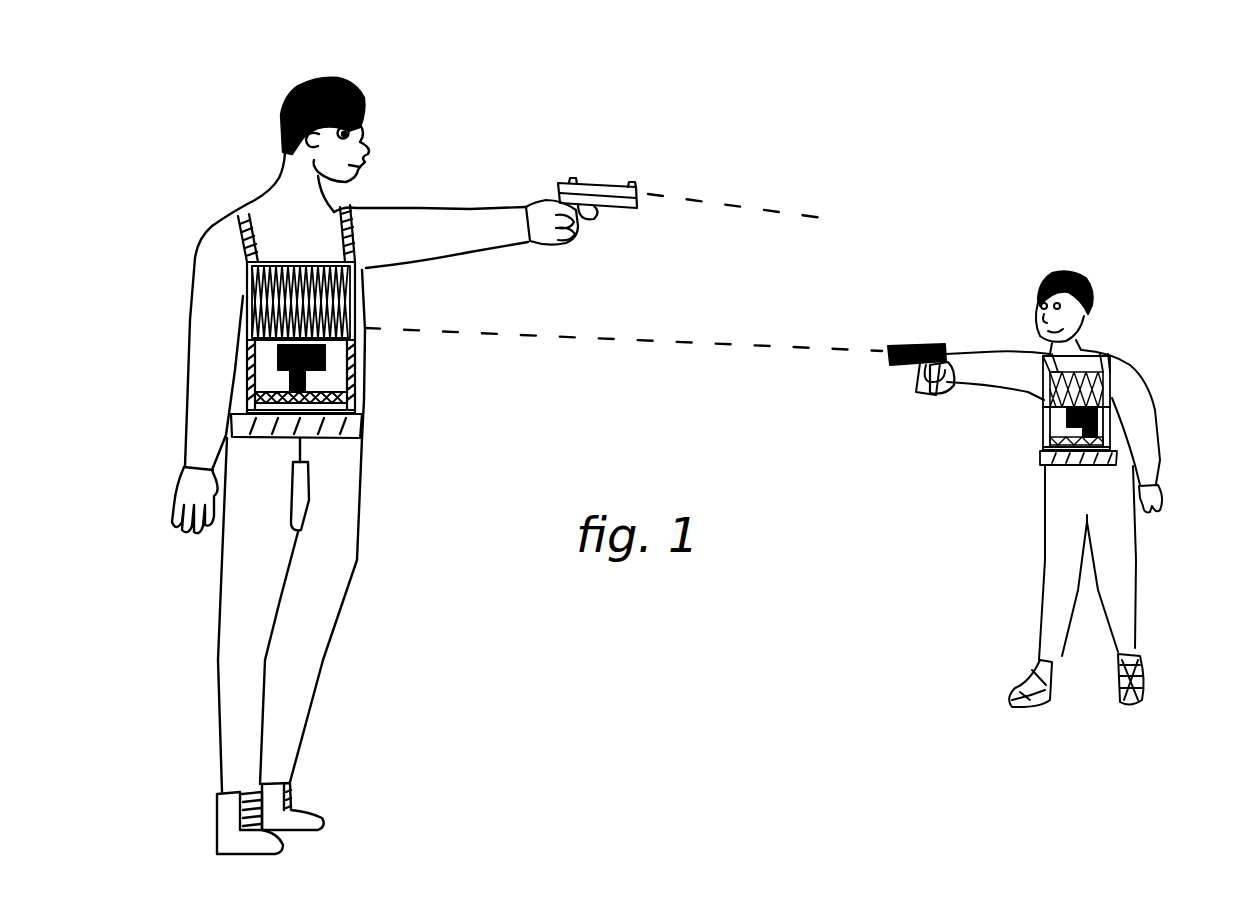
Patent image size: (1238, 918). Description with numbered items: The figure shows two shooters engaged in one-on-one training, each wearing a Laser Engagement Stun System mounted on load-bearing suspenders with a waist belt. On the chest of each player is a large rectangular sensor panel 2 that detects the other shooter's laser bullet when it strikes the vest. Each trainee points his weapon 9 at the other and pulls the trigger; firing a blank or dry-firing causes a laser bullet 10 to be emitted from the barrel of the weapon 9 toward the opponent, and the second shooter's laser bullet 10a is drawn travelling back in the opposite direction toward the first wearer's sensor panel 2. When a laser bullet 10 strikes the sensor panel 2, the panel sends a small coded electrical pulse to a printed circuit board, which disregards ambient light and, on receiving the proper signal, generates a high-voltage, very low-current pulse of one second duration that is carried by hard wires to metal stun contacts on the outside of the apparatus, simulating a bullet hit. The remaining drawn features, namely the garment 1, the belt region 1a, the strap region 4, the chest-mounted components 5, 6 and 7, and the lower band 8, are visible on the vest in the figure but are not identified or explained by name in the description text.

The protective garment 1 is at (352, 383).
The waist belt 1a is at (360, 425).
The sensor panel 2 is at (292, 288).
The shoulder strap 4 is at (353, 263).
The control unit 5 is at (269, 357).
The power source 6 is at (334, 363).
The connector 7 is at (280, 385).
The lower band 8 is at (288, 413).
The weapon 9 is at (615, 164).
The laser bullet 10 is at (804, 204).
The line of fire 10a is at (727, 330).